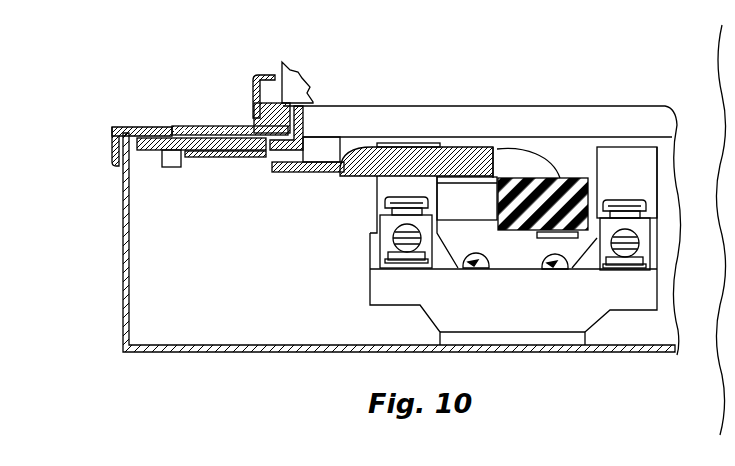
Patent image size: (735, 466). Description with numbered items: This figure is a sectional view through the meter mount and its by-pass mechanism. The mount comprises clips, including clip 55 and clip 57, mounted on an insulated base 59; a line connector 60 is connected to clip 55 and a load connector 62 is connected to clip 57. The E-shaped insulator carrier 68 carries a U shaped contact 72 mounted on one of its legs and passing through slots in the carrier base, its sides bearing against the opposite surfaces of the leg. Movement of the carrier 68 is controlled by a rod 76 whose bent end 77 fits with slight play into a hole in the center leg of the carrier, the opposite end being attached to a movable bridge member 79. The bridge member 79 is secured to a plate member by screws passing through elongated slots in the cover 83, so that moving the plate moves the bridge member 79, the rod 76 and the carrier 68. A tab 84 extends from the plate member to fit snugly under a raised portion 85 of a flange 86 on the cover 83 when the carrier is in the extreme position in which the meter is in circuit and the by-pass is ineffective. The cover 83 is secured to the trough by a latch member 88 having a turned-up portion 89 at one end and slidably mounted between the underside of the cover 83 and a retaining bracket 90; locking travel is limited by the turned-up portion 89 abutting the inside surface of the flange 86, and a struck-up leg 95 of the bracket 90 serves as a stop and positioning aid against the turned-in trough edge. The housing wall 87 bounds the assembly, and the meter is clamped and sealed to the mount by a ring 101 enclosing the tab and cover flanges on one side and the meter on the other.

The clip 55 is at (608, 165).
The clip 57 is at (377, 184).
The insulated base 59 is at (438, 312).
The line connector 60 is at (645, 235).
The load connector 62 is at (385, 240).
The insulator carrier 68 is at (533, 177).
The U shaped contact 72 is at (540, 238).
The rod 76 is at (460, 147).
The bent end of rod 77 is at (561, 177).
The movable bridge member 79 is at (332, 140).
The cover 83 is at (112, 128).
The tab 84 is at (254, 107).
The raised portion 85 is at (283, 63).
The flange 86 is at (425, 106).
The housing wall 87 is at (128, 294).
The latch member 88 is at (265, 158).
The turned-up portion 89 is at (300, 108).
The retaining bracket 90 is at (212, 152).
The leg 95 is at (172, 168).
The ring 101 is at (257, 77).